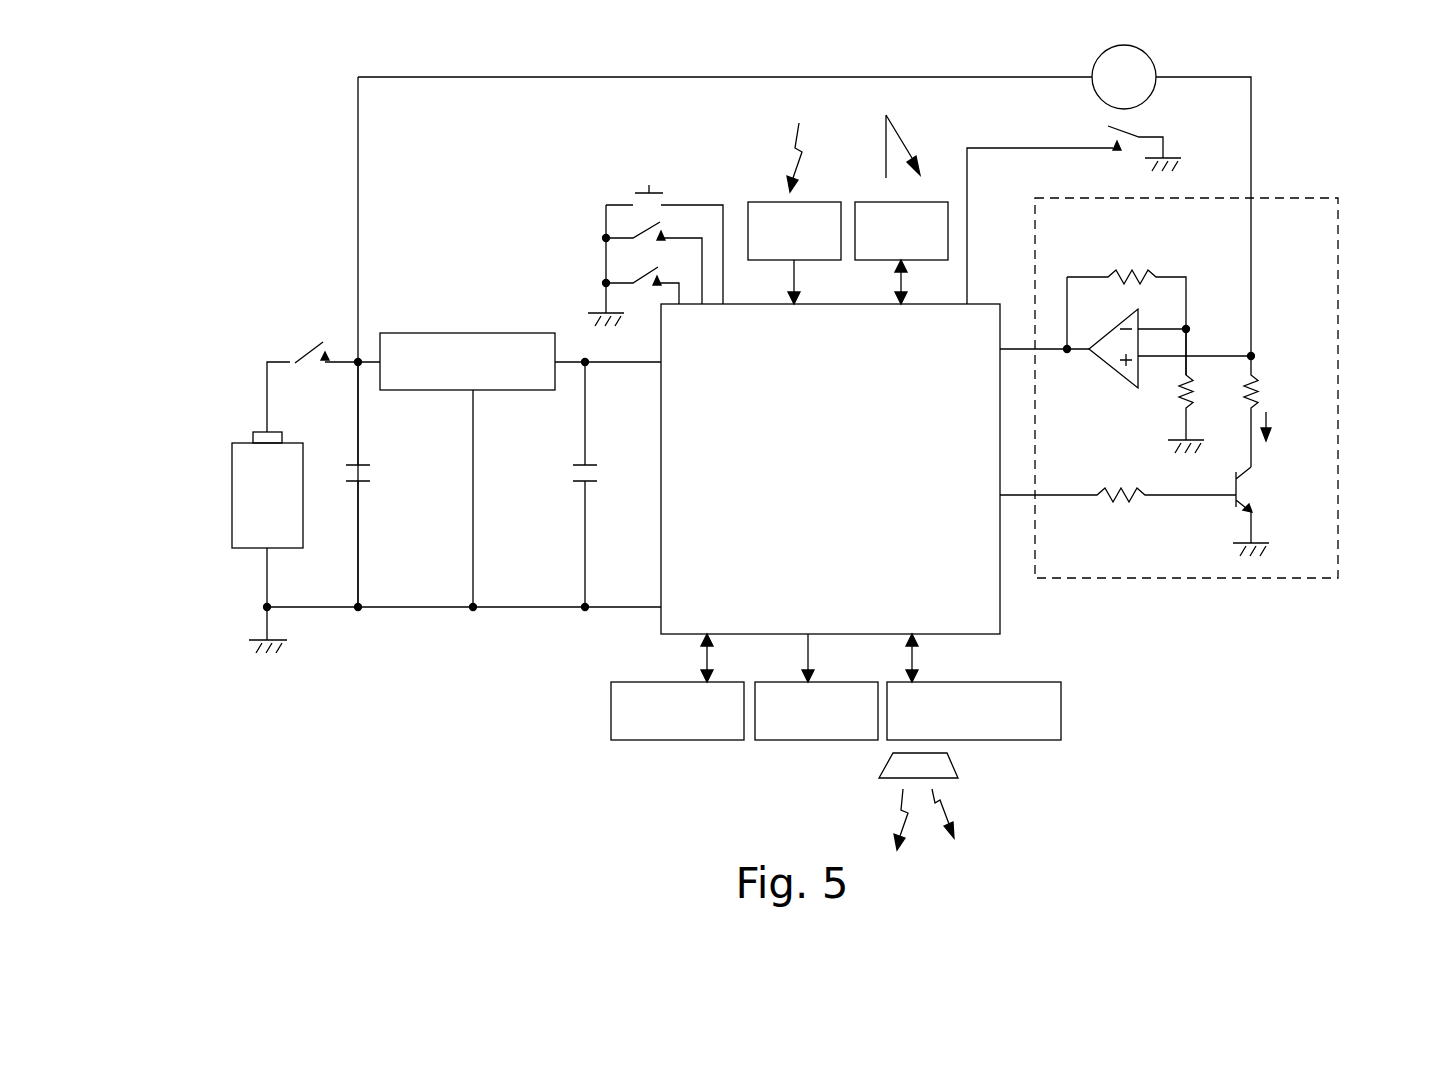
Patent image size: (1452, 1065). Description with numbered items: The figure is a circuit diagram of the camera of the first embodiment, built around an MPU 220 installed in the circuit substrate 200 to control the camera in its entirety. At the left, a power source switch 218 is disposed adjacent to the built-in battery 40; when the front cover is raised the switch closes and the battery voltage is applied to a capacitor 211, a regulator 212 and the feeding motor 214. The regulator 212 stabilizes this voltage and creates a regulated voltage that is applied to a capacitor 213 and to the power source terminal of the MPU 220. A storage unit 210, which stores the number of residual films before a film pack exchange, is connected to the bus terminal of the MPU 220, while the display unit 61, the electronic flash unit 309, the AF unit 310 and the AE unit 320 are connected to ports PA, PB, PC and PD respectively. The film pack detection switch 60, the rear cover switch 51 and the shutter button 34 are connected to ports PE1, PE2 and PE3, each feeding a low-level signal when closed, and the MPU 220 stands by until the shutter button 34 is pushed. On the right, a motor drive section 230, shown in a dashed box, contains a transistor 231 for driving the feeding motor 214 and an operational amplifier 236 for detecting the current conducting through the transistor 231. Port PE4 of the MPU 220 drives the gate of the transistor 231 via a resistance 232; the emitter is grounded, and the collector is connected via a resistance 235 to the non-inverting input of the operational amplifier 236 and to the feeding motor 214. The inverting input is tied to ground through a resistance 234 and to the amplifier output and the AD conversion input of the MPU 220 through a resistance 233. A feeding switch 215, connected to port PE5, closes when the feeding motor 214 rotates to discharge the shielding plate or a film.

The built-in battery 40 is at (232, 487).
The power source switch 218 is at (320, 341).
The capacitor 211 is at (378, 475).
The regulator 212 is at (510, 391).
The capacitor 213 is at (566, 475).
The MPU 220 is at (661, 553).
The shutter button 34 is at (632, 199).
The rear cover switch 51 is at (632, 234).
The film pack detection switch 60 is at (632, 282).
The AE unit 320 is at (752, 201).
The AF unit 310 is at (862, 201).
The feeding motor 214 is at (1150, 58).
The feeding switch 215 is at (1142, 124).
The motor drive section 230 is at (1340, 420).
The operational amplifier 236 is at (1107, 370).
The resistance 233 is at (1128, 273).
The resistance 234 is at (1197, 395).
The resistance 235 is at (1262, 387).
The transistor 231 is at (1248, 490).
The resistance 232 is at (1125, 503).
The storage unit 210 is at (690, 742).
The display unit 61 is at (808, 742).
The electronic flash unit 309 is at (1036, 742).
The circuit substrate 200 is at (563, 758).